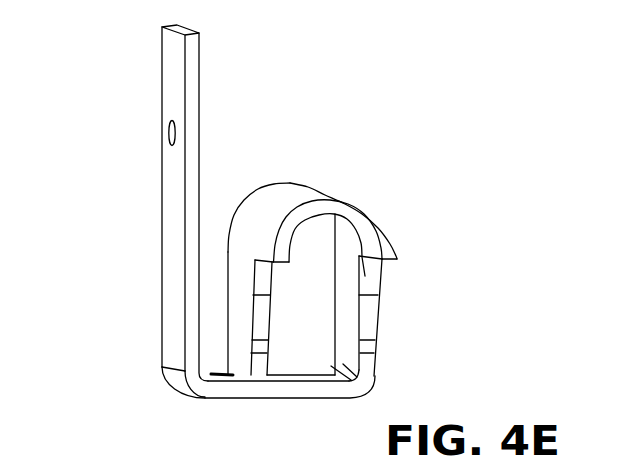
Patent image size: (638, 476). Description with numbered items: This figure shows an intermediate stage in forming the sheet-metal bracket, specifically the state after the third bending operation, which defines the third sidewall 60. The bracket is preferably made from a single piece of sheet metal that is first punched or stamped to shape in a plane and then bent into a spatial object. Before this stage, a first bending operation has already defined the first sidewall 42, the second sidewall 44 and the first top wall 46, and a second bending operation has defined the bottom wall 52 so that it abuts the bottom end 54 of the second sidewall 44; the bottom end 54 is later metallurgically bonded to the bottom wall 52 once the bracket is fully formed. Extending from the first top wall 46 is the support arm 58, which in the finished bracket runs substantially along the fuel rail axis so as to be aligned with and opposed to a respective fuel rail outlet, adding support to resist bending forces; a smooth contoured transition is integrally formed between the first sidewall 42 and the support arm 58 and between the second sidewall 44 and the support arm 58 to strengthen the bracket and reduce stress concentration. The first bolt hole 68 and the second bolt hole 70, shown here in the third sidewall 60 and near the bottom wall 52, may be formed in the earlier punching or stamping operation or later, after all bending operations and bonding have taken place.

The first sidewall 42 is at (358, 309).
The second sidewall 44 is at (236, 292).
The first top wall 46 is at (290, 196).
The bottom wall 52 is at (298, 377).
The bottom end 54 is at (244, 366).
The support arm 58 is at (325, 197).
The third sidewall 60 is at (168, 246).
The first bolt hole 68 is at (169, 134).
The second bolt hole 70 is at (216, 374).